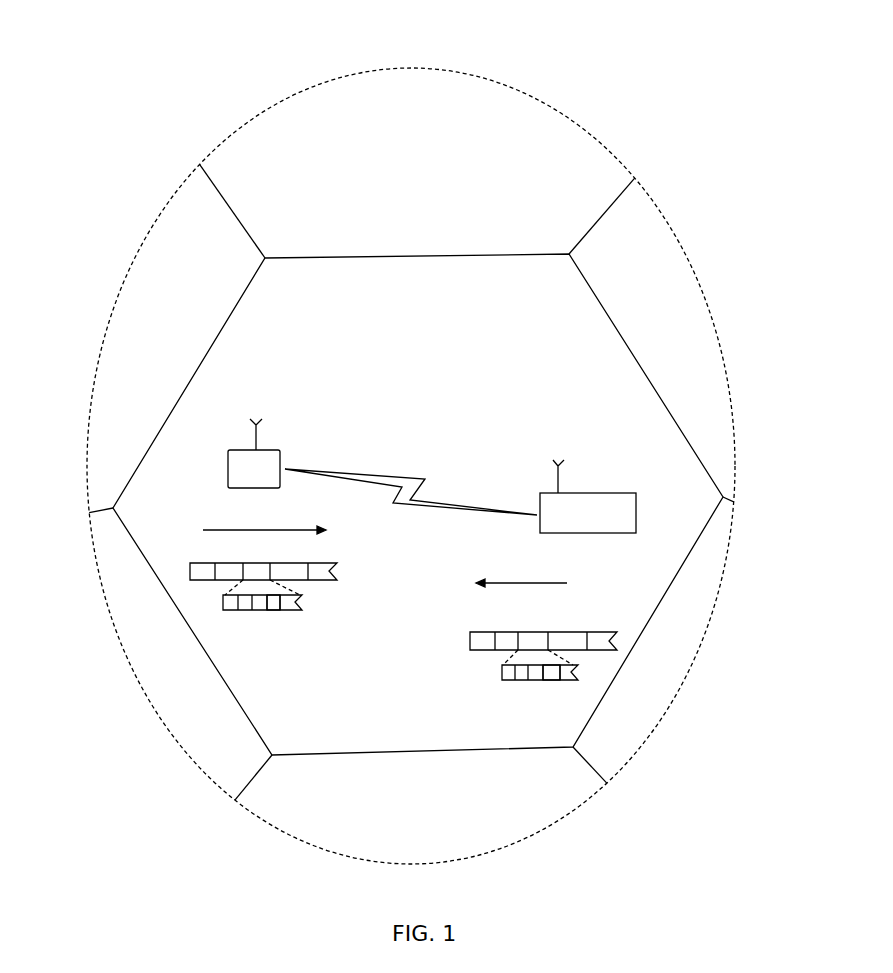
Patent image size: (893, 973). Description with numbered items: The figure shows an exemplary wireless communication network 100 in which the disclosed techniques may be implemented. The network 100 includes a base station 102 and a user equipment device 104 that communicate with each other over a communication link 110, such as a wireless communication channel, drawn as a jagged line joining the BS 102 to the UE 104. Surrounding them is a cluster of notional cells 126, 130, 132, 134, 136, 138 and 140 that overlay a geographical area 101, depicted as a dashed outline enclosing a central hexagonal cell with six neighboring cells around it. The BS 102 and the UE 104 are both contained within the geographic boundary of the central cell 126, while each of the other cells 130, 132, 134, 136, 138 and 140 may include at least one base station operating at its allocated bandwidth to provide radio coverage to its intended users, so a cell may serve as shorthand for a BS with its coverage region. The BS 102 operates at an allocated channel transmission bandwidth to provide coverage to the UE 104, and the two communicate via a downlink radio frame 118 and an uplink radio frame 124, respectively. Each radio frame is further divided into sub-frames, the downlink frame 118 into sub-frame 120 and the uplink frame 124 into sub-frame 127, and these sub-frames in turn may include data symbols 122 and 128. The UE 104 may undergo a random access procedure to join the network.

The wireless communication network 100 is at (358, 30).
The geographical area 101 is at (533, 92).
The base station 102 is at (228, 465).
The user equipment device 104 is at (608, 493).
The communication link 110 is at (408, 472).
The downlink radio frame 118 is at (190, 570).
The sub-frame 120 is at (223, 602).
The data symbol 122 is at (270, 601).
The uplink radio frame 124 is at (588, 632).
The cell 126 is at (290, 307).
The sub-frame 127 is at (502, 674).
The data symbol 128 is at (545, 671).
The cell 130 is at (163, 227).
The cell 132 is at (277, 120).
The cell 134 is at (653, 243).
The cell 136 is at (630, 730).
The cell 138 is at (312, 813).
The cell 140 is at (168, 705).